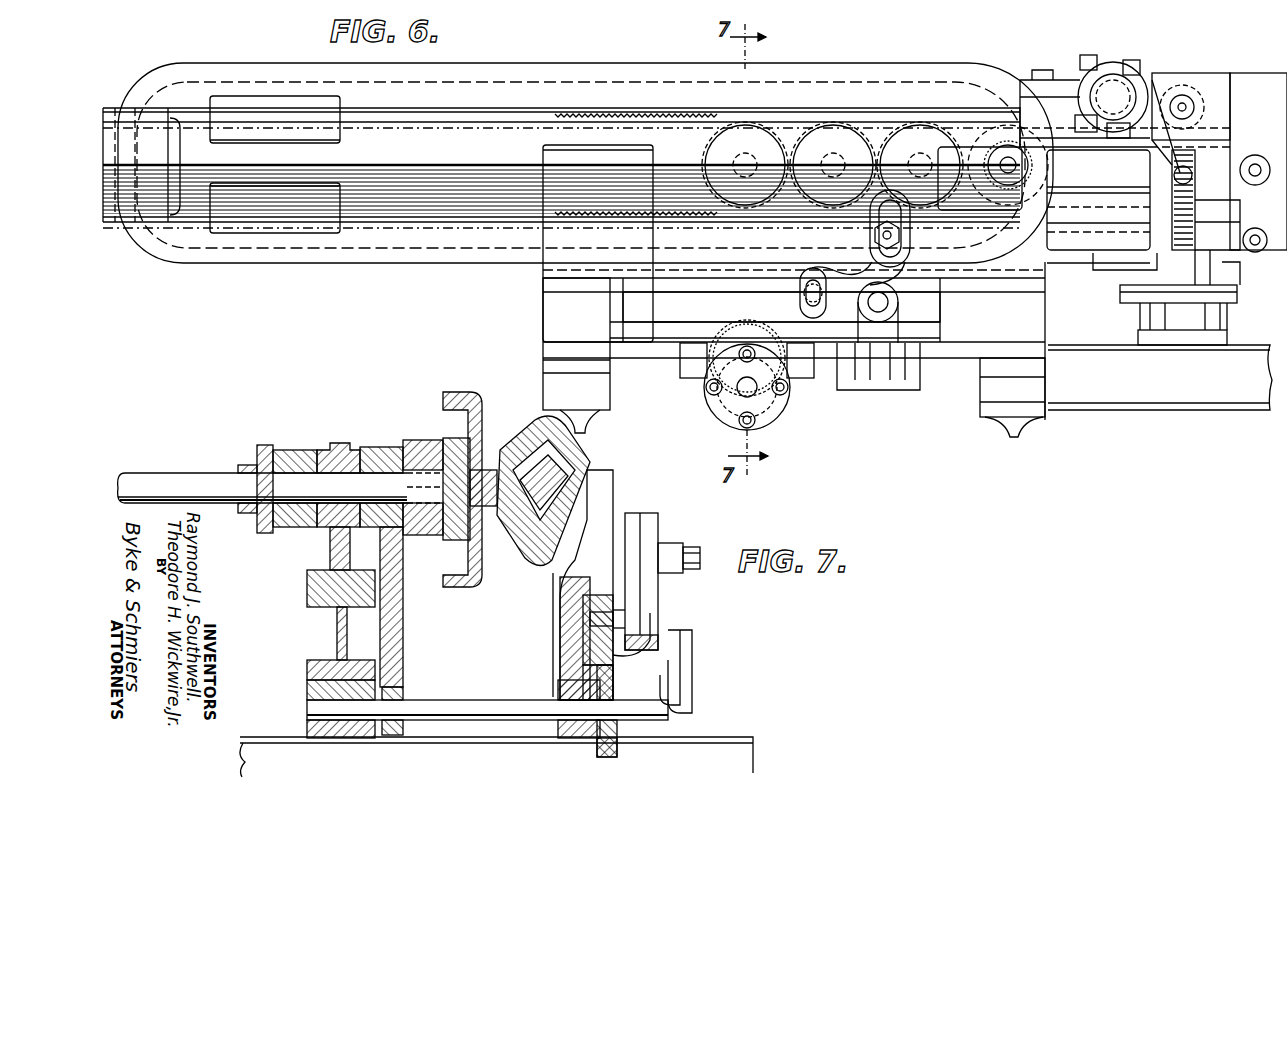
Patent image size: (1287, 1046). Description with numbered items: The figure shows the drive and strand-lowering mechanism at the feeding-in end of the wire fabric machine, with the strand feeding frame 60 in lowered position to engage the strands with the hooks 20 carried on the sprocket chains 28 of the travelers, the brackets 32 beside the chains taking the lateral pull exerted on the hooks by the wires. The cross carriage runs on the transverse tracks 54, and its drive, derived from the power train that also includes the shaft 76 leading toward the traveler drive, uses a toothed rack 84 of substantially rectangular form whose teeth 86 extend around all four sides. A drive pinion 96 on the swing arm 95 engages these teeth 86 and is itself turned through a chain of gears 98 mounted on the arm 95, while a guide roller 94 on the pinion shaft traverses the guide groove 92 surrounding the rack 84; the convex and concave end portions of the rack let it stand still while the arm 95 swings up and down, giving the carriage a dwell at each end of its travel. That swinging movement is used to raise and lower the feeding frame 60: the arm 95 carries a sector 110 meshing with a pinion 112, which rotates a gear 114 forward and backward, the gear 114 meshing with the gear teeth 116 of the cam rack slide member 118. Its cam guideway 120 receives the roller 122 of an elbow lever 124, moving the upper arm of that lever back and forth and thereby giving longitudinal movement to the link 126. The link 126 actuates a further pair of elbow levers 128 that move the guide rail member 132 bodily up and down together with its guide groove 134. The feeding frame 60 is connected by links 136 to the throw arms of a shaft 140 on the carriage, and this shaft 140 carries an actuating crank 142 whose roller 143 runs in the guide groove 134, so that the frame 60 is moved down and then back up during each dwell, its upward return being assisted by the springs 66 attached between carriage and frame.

In FIG. 6, the hooks 20 is at (1237, 296).
In FIG. 6, the sprocket chains 28 is at (1150, 316).
In FIG. 6, the brackets 32 is at (1180, 287).
In FIG. 6, the tracks 54 is at (428, 194).
In FIG. 7, the tracks 54 is at (567, 470).
In FIG. 6, the wire feeding frame 60 is at (1222, 272).
In FIG. 6, the springs 66 is at (1200, 232).
In FIG. 7, the shaft 76 is at (180, 503).
In FIG. 6, the toothed racks 84 is at (631, 114).
In FIG. 7, the toothed racks 84 is at (428, 440).
In FIG. 6, the teeth 86 is at (670, 114).
In FIG. 7, the teeth 86 is at (400, 436).
In FIG. 7, the guide groove 92 is at (445, 400).
In FIG. 6, the guide roller 94 is at (1004, 132).
In FIG. 6, the swing arm 95 is at (880, 128).
In FIG. 7, the swing arm 95 is at (360, 455).
In FIG. 6, the drive pinion 96 is at (1005, 222).
In FIG. 7, the drive pinion 96 is at (410, 487).
In FIG. 6, the chain of gears 98 is at (790, 135).
In FIG. 7, the chain of gears 98 is at (265, 445).
In FIG. 7, the sector 110 is at (405, 665).
In FIG. 6, the pinion 112 is at (712, 414).
In FIG. 7, the pinion 112 is at (405, 690).
In FIG. 6, the gear 114 is at (790, 420).
In FIG. 7, the gear 114 is at (597, 748).
In FIG. 6, the gear teeth 116 is at (690, 372).
In FIG. 7, the gear teeth 116 is at (575, 672).
In FIG. 6, the cam rack slide member 118 is at (668, 340).
In FIG. 7, the cam rack slide member 118 is at (580, 660).
In FIG. 6, the cam guideway 120 is at (668, 290).
In FIG. 7, the cam guideway 120 is at (615, 645).
In FIG. 6, the roller 122 is at (800, 288).
In FIG. 7, the roller 122 is at (605, 620).
In FIG. 6, the elbow lever 124 is at (898, 302).
In FIG. 7, the elbow lever 124 is at (652, 505).
In FIG. 6, the link 126 is at (1085, 250).
In FIG. 7, the link 126 is at (672, 548).
In FIG. 6, the elbow levers 128 is at (1196, 205).
In FIG. 6, the guide rail member 132 is at (1258, 75).
In FIG. 6, the guide groove 134 is at (1146, 92).
In FIG. 6, the links 136 is at (1215, 128).
In FIG. 6, the shaft 140 is at (1125, 95).
In FIG. 6, the actuating crank 142 is at (1098, 62).
In FIG. 6, the roller 143 is at (1185, 90).